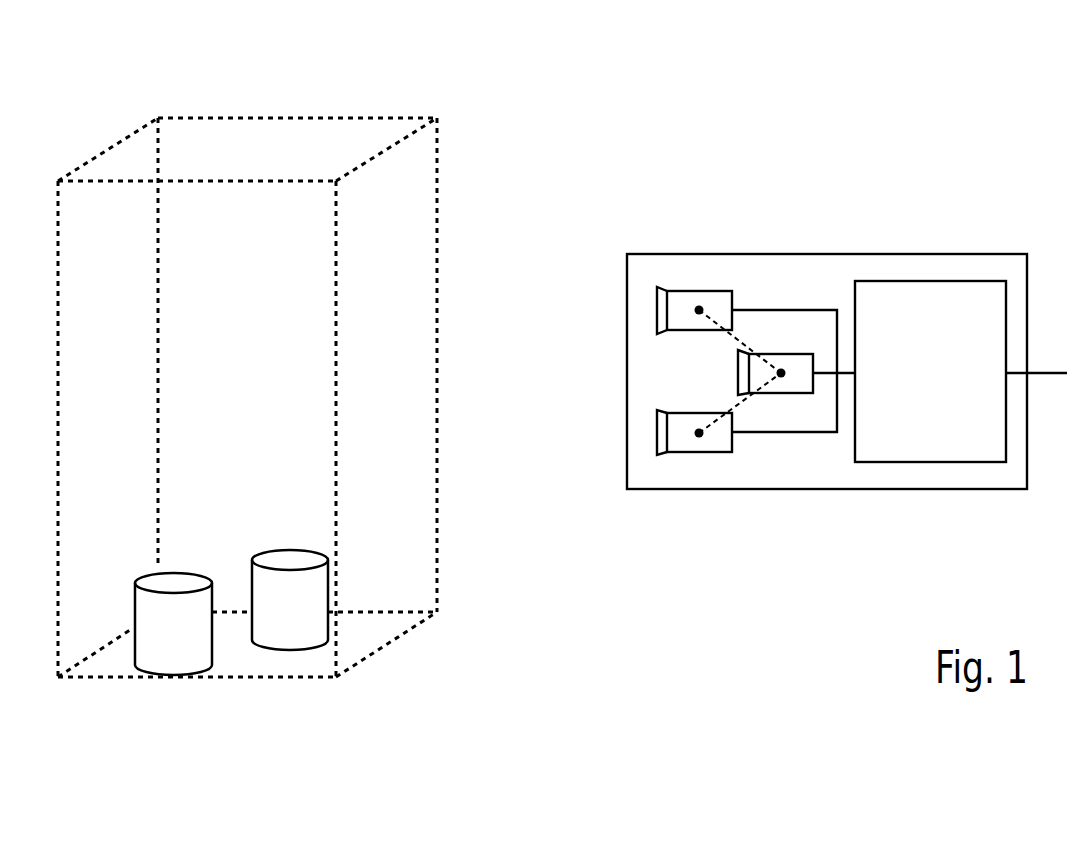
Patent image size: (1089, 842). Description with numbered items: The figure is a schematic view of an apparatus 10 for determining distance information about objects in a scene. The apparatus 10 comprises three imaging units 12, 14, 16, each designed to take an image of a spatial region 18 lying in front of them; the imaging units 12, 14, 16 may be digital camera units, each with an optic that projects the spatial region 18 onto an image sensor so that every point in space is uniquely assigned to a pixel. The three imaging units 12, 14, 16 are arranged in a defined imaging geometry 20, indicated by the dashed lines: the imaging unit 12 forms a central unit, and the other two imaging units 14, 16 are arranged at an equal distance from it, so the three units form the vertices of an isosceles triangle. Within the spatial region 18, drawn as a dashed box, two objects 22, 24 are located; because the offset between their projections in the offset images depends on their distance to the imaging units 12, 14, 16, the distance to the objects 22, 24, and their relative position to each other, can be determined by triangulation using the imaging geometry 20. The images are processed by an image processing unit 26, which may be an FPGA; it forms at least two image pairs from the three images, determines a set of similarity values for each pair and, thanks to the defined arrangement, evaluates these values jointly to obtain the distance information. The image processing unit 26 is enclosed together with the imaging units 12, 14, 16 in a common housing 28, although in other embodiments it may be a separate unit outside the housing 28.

The apparatus 10 is at (860, 166).
The imaging unit 12 is at (798, 368).
The imaging unit 14 is at (680, 440).
The imaging unit 16 is at (685, 312).
The spatial region 18 is at (273, 147).
The imaging geometry 20 is at (740, 400).
The object 22 is at (162, 647).
The object 24 is at (287, 625).
The image processing unit 26 is at (918, 438).
The housing 28 is at (852, 490).